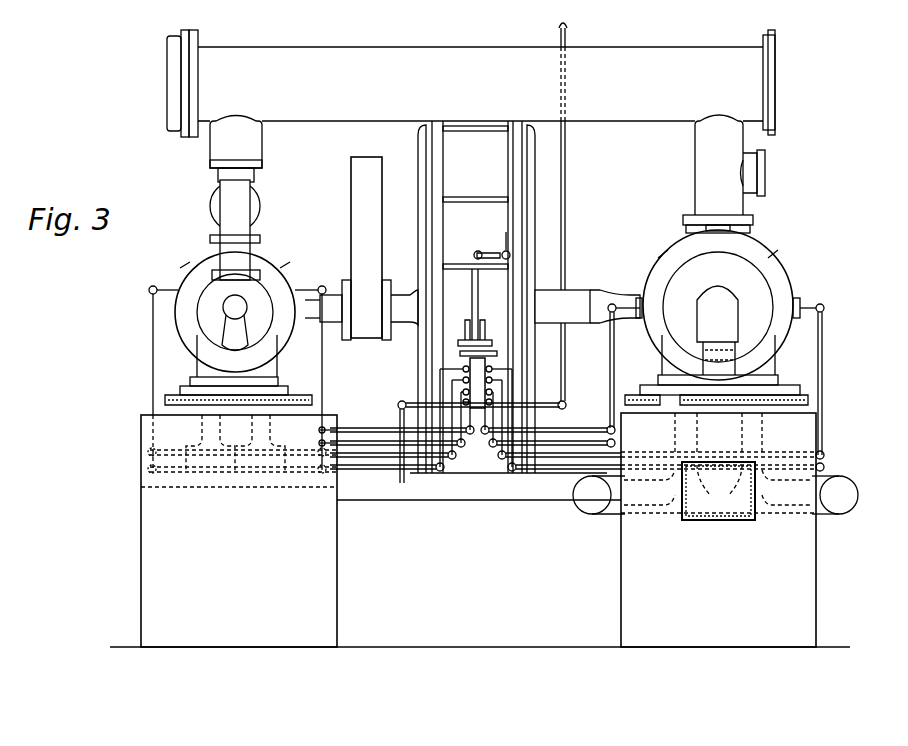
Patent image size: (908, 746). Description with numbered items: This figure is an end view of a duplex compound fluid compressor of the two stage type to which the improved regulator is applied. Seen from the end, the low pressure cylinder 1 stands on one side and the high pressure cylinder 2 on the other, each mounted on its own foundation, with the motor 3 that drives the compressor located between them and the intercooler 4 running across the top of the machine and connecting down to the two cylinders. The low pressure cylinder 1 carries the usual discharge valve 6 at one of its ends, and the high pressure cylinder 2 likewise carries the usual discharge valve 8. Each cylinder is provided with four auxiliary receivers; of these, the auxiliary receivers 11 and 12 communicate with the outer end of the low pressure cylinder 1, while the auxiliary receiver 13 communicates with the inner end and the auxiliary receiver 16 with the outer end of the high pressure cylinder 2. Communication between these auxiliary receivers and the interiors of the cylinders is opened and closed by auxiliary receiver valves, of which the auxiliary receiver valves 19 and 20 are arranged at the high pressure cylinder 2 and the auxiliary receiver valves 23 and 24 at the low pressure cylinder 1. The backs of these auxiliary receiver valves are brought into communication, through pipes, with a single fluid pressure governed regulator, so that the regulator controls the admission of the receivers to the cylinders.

The low pressure cylinder 1 is at (668, 252).
The high pressure cylinder 2 is at (280, 275).
The motor 3 is at (479, 310).
The intercooler 4 is at (471, 83).
The discharge valve 6 is at (762, 243).
The discharge valve 8 is at (258, 258).
The auxiliary receiver 11 is at (845, 500).
The auxiliary receiver 12 is at (590, 498).
The auxiliary receiver 13 is at (320, 458).
The auxiliary receiver 16 is at (150, 473).
The auxiliary receiver valve 19 is at (820, 300).
The auxiliary receiver valve 20 is at (634, 296).
The auxiliary receiver valve 23 is at (318, 282).
The auxiliary receiver valve 24 is at (180, 278).